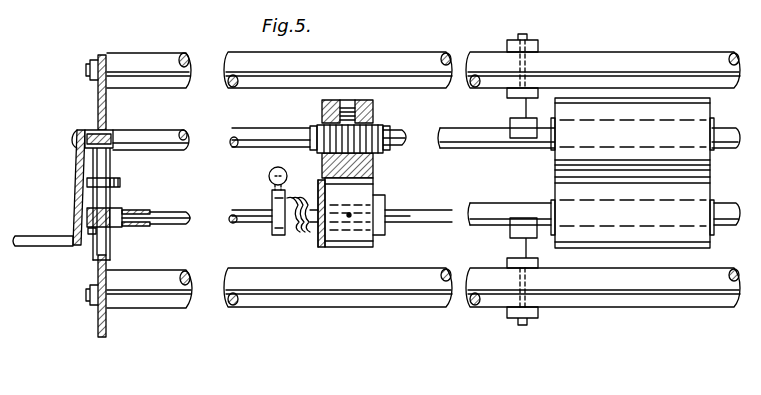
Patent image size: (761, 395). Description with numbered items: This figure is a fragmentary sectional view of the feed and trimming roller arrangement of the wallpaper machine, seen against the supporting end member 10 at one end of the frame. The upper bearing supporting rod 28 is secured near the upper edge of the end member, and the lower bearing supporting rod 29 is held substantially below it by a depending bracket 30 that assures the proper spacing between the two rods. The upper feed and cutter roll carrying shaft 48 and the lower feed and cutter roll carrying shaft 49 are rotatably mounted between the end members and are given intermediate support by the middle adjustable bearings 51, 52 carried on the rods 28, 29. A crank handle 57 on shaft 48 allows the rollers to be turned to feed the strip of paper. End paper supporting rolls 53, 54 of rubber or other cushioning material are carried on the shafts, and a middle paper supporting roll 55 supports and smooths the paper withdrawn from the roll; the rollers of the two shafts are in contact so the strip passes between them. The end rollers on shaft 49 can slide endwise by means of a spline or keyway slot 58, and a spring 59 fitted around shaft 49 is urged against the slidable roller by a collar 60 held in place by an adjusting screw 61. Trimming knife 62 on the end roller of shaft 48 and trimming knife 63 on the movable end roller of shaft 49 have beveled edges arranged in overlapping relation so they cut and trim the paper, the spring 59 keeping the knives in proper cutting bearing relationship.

The supporting end member 10 is at (97, 98).
The upper bearing supporting rod 28 is at (155, 48).
The lower bearing supporting rod 29 is at (151, 308).
The depending bracket 30 is at (97, 315).
The crank handle 57 is at (75, 175).
The upper feed and cutter roll carrying shaft 48 is at (447, 130).
The trimming knife 62 is at (320, 108).
The end paper supporting roll 54 is at (376, 165).
The end paper supporting roll 53 is at (374, 185).
The spline or keyway slot 58 is at (395, 215).
The spring 59 is at (300, 220).
The collar 60 is at (272, 198).
The adjusting screw 61 is at (268, 175).
The trimming knife 63 is at (324, 250).
The middle adjustable bearing 51 is at (510, 128).
The middle paper supporting roll 55 is at (560, 185).
The lower feed and cutter roll carrying shaft 49 is at (491, 205).
The middle adjustable bearing 52 is at (510, 228).